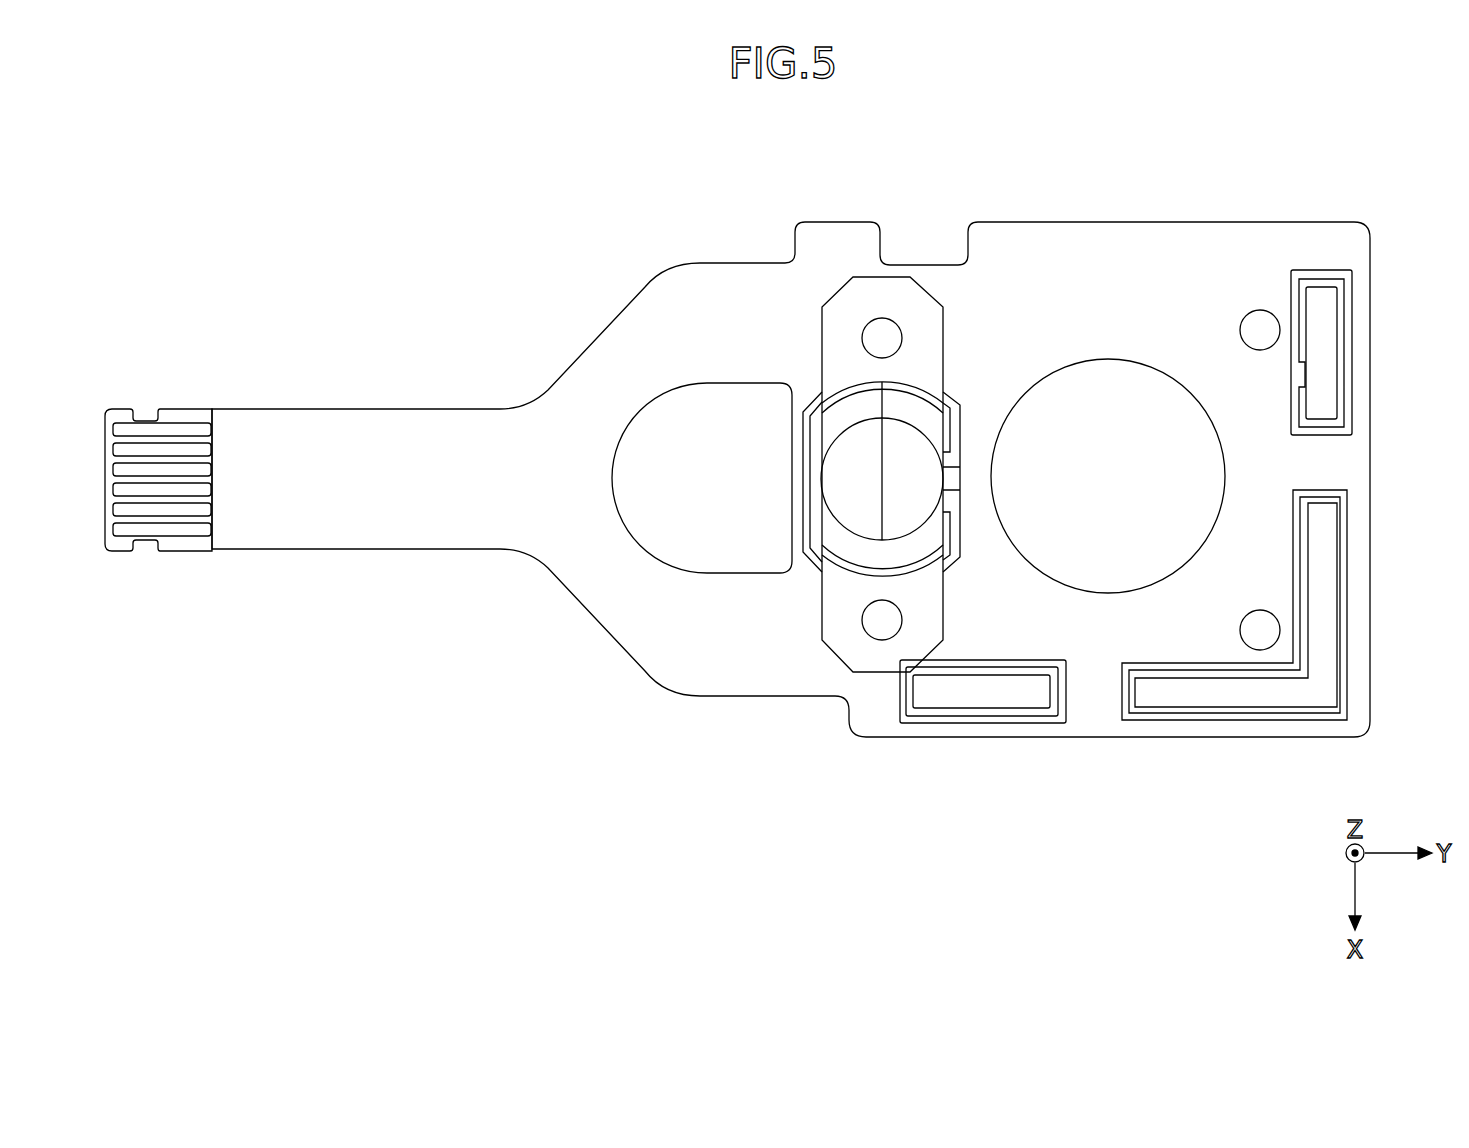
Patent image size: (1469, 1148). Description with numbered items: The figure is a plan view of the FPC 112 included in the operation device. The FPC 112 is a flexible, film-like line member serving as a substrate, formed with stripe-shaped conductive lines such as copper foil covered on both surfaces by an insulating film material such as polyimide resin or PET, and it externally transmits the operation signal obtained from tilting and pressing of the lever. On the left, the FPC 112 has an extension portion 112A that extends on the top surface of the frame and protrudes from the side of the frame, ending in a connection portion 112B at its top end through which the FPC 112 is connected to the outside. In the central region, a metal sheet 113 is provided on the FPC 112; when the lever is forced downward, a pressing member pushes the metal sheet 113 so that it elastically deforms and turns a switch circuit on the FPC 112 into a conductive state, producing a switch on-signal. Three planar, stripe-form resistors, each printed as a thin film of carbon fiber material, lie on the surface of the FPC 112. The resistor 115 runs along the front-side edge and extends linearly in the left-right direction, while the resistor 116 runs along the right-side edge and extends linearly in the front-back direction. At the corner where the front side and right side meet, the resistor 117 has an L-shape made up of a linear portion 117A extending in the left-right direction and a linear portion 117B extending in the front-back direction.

The FPC 112 is at (1290, 222).
The extension portion 112A is at (400, 540).
The connection portion 112B is at (180, 552).
The metal sheet 113 is at (848, 522).
The resistor 115 is at (1005, 700).
The resistor 116 is at (1345, 335).
The resistor 117 is at (1170, 700).
The linear portion 117A is at (1258, 700).
The linear portion 117B is at (1322, 572).